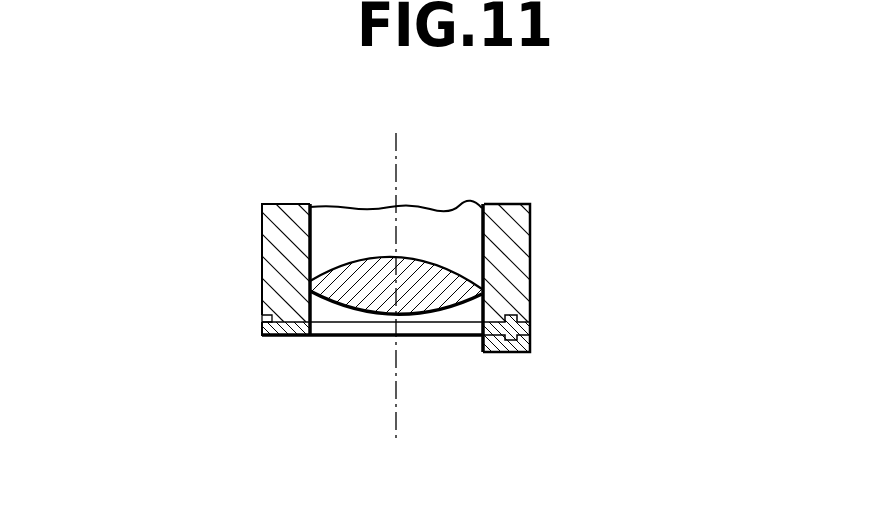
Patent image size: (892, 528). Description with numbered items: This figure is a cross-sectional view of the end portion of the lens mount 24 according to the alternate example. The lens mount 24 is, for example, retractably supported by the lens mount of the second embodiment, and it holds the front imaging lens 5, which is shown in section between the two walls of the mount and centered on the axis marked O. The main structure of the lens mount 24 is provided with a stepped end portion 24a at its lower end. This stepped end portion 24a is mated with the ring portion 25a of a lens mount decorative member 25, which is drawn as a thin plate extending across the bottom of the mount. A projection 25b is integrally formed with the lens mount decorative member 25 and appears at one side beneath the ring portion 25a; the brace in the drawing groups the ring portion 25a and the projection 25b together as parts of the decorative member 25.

The lens mount 24 is at (507, 263).
The stepped end portion 24a is at (292, 322).
The lens mount decorative member 25 is at (445, 343).
The ring portion 25a is at (531, 318).
The projection 25b is at (508, 354).
The front imaging lens 5 is at (350, 302).
The optical axis O is at (397, 383).